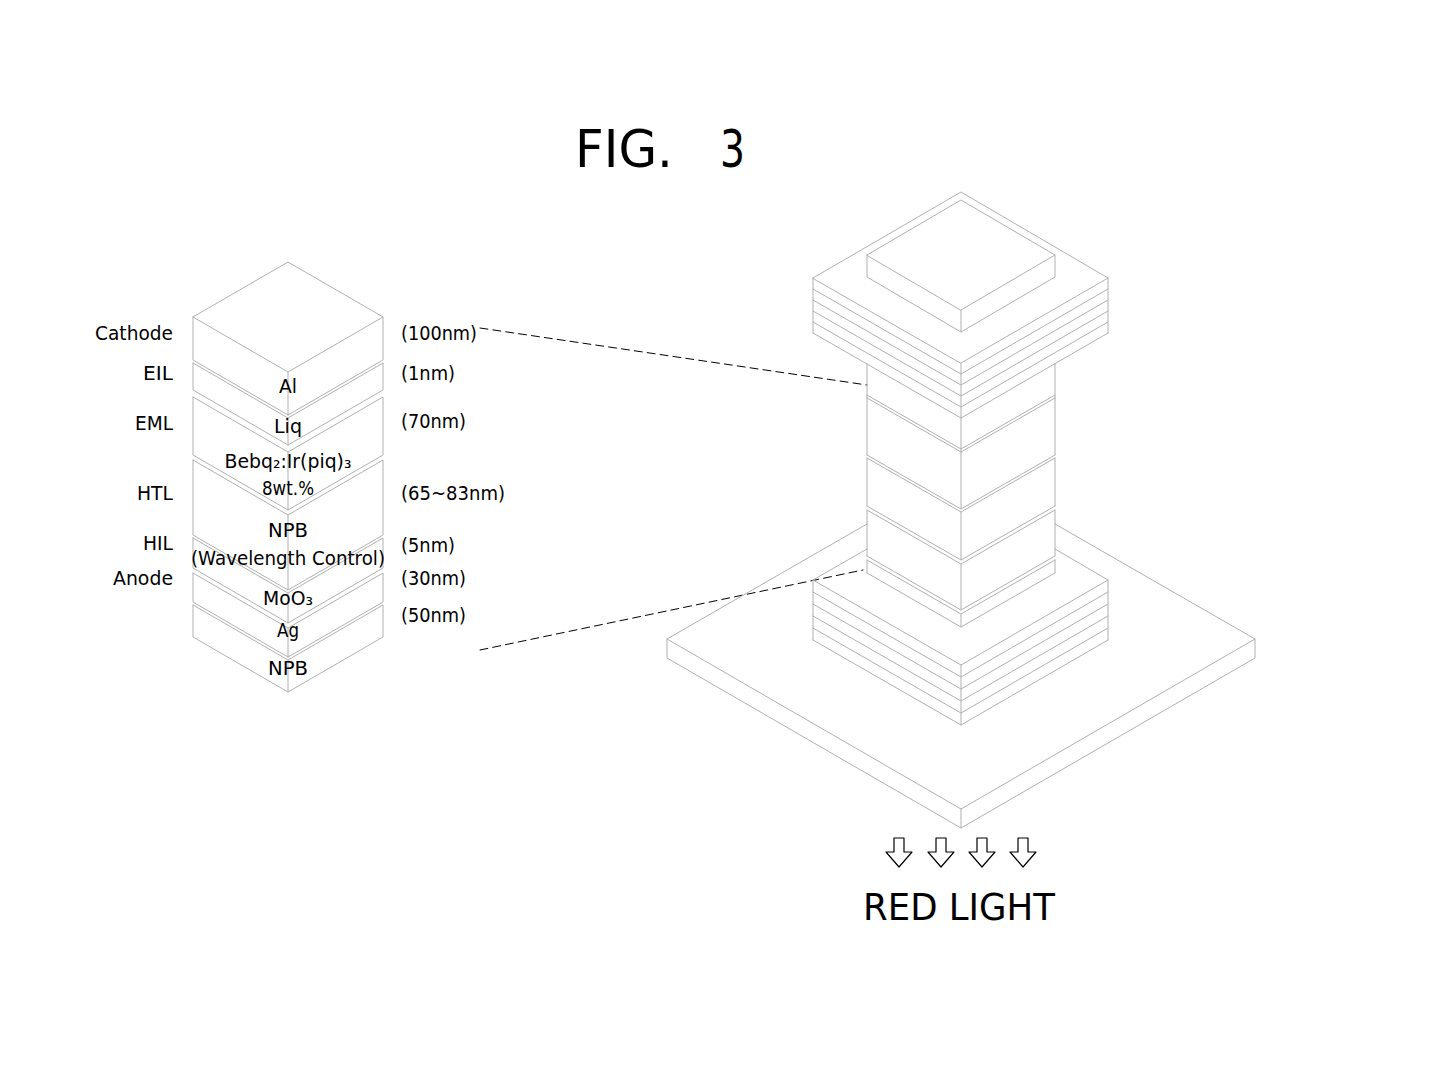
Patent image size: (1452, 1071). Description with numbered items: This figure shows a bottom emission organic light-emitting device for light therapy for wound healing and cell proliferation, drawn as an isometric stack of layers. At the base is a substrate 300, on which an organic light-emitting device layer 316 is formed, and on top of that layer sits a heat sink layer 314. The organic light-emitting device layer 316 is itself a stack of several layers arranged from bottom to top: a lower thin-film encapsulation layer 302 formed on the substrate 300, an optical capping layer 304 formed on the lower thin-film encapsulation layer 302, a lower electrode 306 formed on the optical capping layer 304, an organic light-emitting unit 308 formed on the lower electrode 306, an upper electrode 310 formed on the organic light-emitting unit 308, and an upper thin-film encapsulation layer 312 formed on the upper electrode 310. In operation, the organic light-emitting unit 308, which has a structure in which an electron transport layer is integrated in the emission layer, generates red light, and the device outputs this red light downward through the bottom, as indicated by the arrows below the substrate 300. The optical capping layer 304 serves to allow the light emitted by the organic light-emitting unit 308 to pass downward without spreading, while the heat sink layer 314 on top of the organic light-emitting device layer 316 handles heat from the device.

The substrate 300 is at (1257, 647).
The lower thin-film encapsulation layer 302 is at (1108, 603).
The optical capping layer 304 is at (1055, 568).
The lower electrode 306 is at (1055, 533).
The organic light-emitting unit 308 is at (1055, 490).
The upper electrode 310 is at (1055, 423).
The upper thin-film encapsulation layer 312 is at (1108, 307).
The heat sink layer 314 is at (1055, 265).
The organic light-emitting device layer 316 is at (1343, 603).